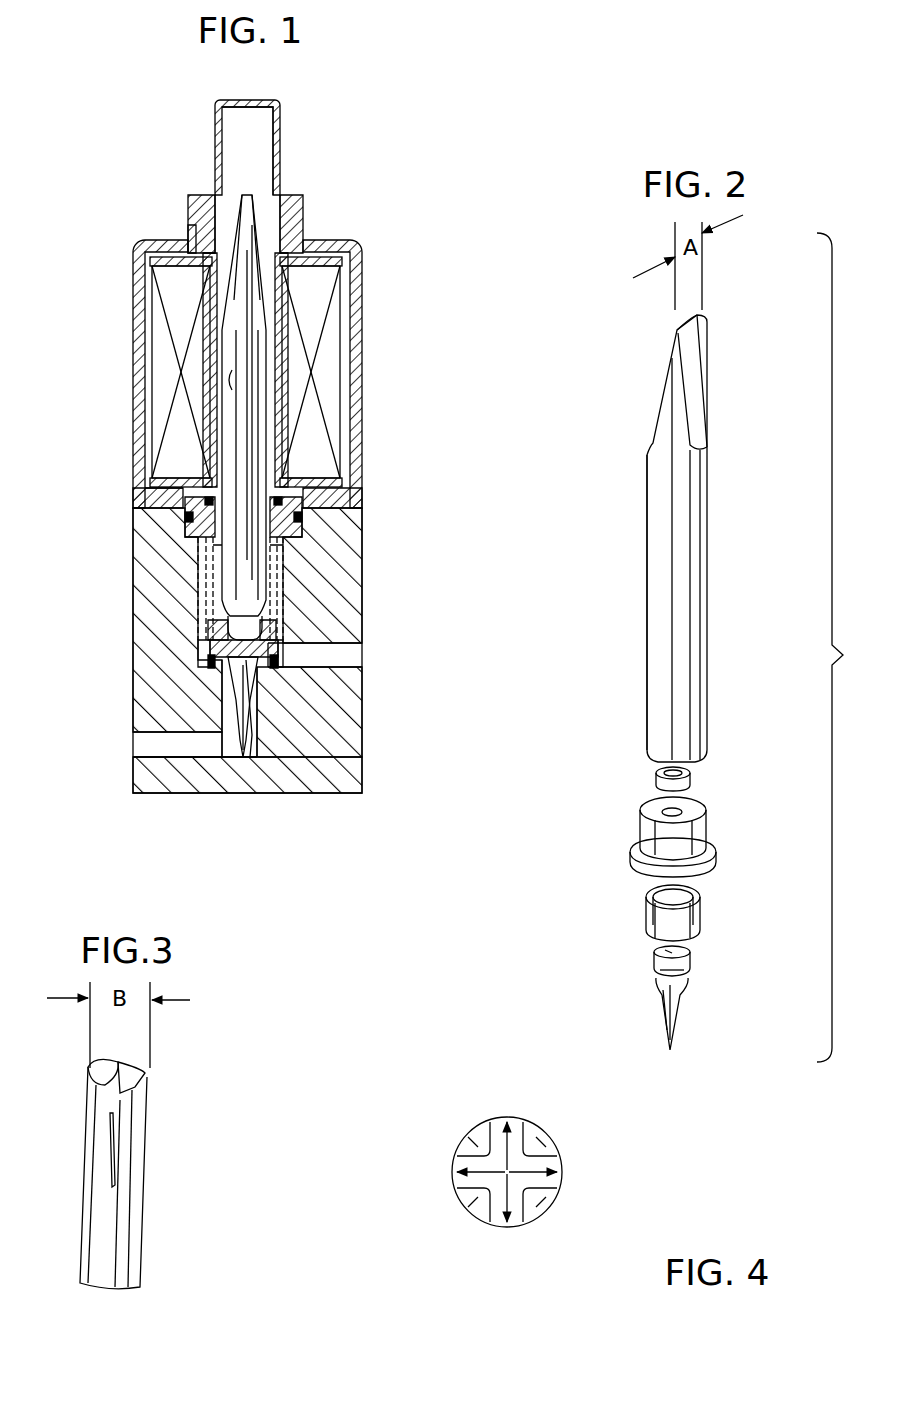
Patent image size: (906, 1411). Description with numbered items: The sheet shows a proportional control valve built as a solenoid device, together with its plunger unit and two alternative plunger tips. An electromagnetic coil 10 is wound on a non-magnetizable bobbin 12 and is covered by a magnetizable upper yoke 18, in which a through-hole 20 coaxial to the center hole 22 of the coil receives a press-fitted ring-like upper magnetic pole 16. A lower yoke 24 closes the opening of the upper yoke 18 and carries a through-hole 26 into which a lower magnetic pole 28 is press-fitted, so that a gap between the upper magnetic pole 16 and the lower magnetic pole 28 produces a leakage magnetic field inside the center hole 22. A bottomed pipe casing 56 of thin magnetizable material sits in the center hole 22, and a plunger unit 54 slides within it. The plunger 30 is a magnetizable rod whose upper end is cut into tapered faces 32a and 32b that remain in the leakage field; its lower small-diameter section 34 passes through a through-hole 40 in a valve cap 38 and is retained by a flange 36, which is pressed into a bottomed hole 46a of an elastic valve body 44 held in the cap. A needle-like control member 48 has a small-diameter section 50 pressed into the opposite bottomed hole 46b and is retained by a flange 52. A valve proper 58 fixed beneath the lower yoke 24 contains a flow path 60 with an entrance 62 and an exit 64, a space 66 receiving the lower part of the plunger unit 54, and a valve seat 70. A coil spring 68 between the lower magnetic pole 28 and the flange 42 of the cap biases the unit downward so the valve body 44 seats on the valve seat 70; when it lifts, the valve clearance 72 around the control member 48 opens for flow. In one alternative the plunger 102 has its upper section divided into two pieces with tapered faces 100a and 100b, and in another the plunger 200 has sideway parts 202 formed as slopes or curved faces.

In FIG. 1, the electromagnetic coil 10 is at (338, 378).
In FIG. 1, the bobbin 12 is at (345, 248).
In FIG. 1, the upper magnetic pole 16 is at (190, 200).
In FIG. 1, the upper yoke 18 is at (145, 342).
In FIG. 1, the through-hole 20 is at (190, 232).
In FIG. 1, the center hole 22 is at (230, 380).
In FIG. 1, the lower yoke 24 is at (150, 492).
In FIG. 1, the through-hole 26 is at (180, 512).
In FIG. 1, the lower magnetic pole 28 is at (300, 520).
In FIG. 1, the plunger 30 is at (252, 210).
In FIG. 2, the plunger 30 is at (707, 515).
In FIG. 1, the tapered face 32a is at (262, 245).
In FIG. 2, the tapered face 32a is at (697, 390).
In FIG. 1, the tapered face 32b is at (238, 225).
In FIG. 2, the tapered face 32b is at (665, 390).
In FIG. 2, the small-diameter section 34 is at (692, 768).
In FIG. 2, the flange 36 is at (658, 782).
In FIG. 1, the valve cap 38 is at (210, 648).
In FIG. 2, the valve cap 38 is at (712, 823).
In FIG. 2, the through-hole 40 is at (690, 808).
In FIG. 2, the flange 42 is at (635, 848).
In FIG. 1, the valve body 44 is at (210, 630).
In FIG. 2, the valve body 44 is at (708, 925).
In FIG. 1, the bottomed hole 46a is at (252, 618).
In FIG. 2, the bottomed hole 46a is at (695, 890).
In FIG. 1, the bottomed hole 46b is at (225, 660).
In FIG. 2, the bottomed hole 46b is at (650, 935).
In FIG. 1, the control member 48 is at (240, 760).
In FIG. 2, the control member 48 is at (690, 1015).
In FIG. 2, the small-diameter section 50 is at (690, 975).
In FIG. 2, the flange 52 is at (660, 955).
In FIG. 1, the plunger unit 54 is at (248, 150).
In FIG. 2, the plunger unit 54 is at (737, 597).
In FIG. 1, the pipe casing 56 is at (242, 100).
In FIG. 1, the valve proper 58 is at (365, 748).
In FIG. 1, the flow path 60 is at (165, 748).
In FIG. 1, the entrance 62 is at (362, 655).
In FIG. 1, the exit 64 is at (150, 738).
In FIG. 1, the space 66 is at (200, 565).
In FIG. 1, the coil spring 68 is at (270, 553).
In FIG. 1, the valve seat 70 is at (258, 678).
In FIG. 1, the valve clearance 72 is at (252, 760).
In FIG. 3, the tapered face 100a is at (113, 1150).
In FIG. 3, the tapered face 100b is at (110, 1105).
In FIG. 3, the plunger 102 is at (78, 1200).
In FIG. 4, the plunger 200 is at (545, 1225).
In FIG. 4, the sideway parts 202 is at (462, 1148).